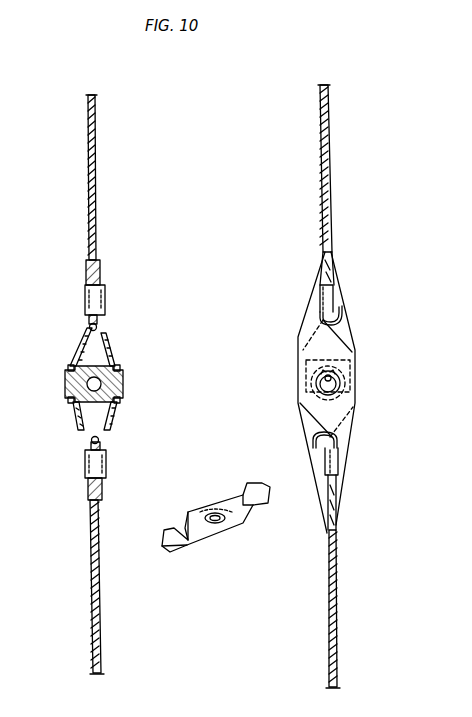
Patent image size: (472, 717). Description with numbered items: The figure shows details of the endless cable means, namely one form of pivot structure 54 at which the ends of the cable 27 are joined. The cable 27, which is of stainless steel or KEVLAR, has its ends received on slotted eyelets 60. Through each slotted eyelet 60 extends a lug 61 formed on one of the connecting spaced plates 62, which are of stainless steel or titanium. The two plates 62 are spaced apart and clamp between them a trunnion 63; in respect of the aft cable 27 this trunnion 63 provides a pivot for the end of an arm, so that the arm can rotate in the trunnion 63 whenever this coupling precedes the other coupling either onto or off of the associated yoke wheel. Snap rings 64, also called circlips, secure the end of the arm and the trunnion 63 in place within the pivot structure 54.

The cable 27 is at (96, 165).
The pivot structure 54 is at (126, 403).
The slotted eyelet 60 is at (100, 264).
The lug 61 is at (104, 296).
The connecting spaced plate 62 is at (73, 350).
The trunnion 63 is at (66, 379).
The snap ring 64 is at (118, 370).